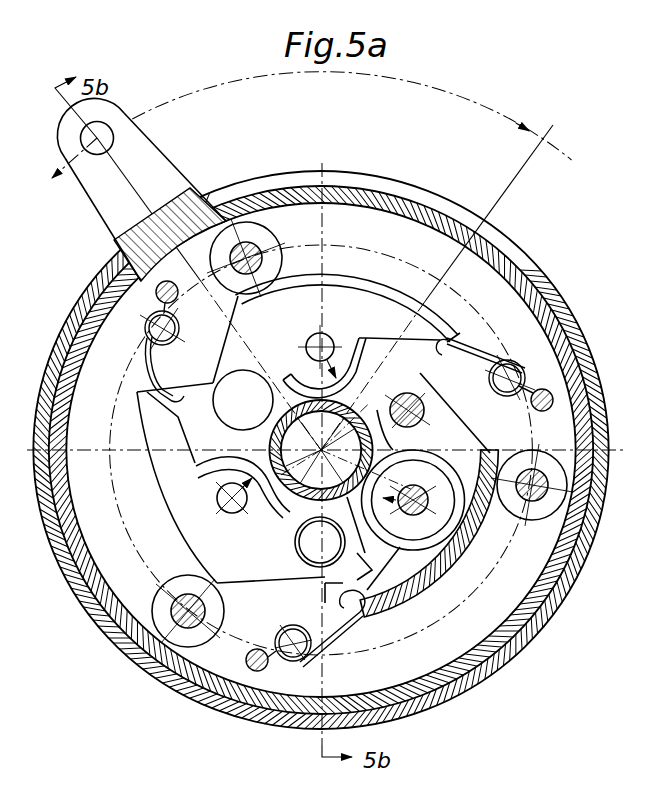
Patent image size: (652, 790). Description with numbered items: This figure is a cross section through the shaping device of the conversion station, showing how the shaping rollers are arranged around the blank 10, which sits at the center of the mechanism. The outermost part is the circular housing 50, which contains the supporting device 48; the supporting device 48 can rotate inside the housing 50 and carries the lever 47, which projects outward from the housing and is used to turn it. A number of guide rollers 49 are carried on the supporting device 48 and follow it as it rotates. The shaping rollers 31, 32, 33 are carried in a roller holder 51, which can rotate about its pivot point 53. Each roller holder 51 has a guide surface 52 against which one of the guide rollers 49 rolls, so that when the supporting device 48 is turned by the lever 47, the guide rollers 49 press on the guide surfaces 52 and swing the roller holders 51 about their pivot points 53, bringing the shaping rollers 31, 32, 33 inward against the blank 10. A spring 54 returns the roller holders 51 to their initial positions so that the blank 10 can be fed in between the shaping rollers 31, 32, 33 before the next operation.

The blank 10 is at (289, 386).
The shaping roller 31 is at (358, 345).
The shaping roller 32 is at (200, 475).
The shaping roller 33 is at (457, 532).
The lever 47 is at (100, 200).
The supporting device 48 is at (384, 200).
The guide rollers 49 is at (266, 244).
The circular housing 50 is at (518, 258).
The roller holder 51 is at (463, 440).
The guide surface 52 is at (452, 585).
The pivot point 53 is at (420, 400).
The spring 54 is at (346, 630).